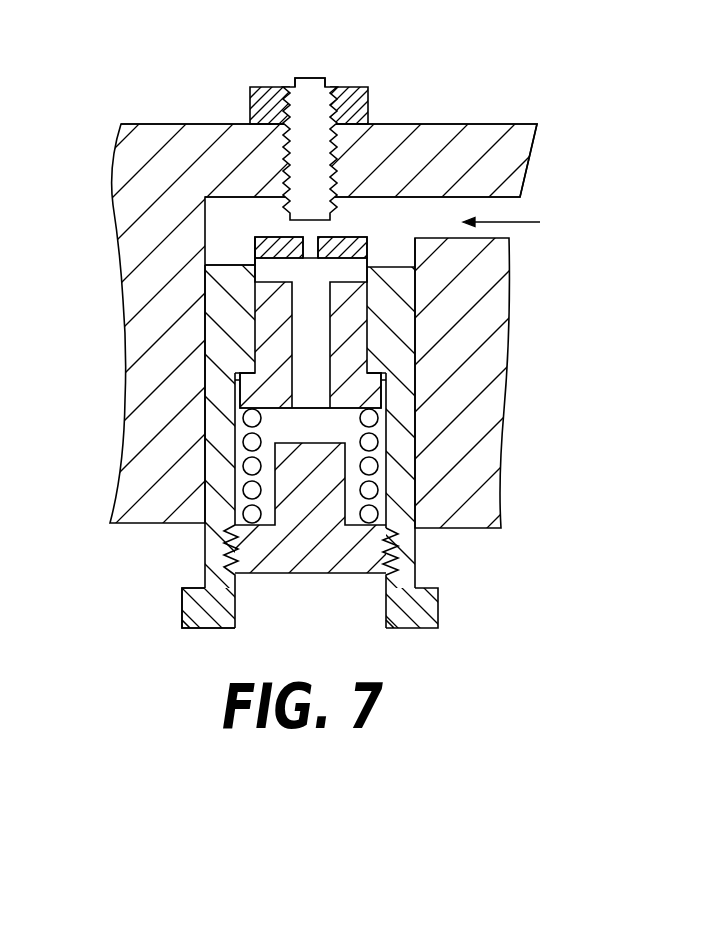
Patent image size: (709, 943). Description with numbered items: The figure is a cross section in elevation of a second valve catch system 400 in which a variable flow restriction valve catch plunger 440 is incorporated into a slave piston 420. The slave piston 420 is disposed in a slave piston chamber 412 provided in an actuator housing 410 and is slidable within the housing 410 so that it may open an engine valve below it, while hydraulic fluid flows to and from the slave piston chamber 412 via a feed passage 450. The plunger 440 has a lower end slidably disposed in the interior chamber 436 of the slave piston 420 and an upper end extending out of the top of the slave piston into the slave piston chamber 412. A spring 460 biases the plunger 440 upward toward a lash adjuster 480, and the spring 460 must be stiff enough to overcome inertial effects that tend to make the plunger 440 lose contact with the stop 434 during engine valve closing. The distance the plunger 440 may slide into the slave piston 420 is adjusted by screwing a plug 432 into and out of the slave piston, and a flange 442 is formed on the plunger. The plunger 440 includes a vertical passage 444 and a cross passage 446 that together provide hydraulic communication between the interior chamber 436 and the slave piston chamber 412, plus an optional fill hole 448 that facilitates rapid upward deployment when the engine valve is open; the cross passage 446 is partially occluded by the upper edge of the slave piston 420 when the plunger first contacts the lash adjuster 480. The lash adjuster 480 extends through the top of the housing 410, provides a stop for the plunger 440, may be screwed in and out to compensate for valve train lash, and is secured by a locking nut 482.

The system 400 is at (138, 572).
The actuator housing 410 is at (147, 197).
The slave piston chamber 412 is at (237, 213).
The slave piston 420 is at (420, 612).
The plug 432 is at (305, 572).
The stop 434 is at (241, 368).
The interior chamber 436 is at (330, 427).
The plunger 440 is at (343, 335).
The piston flange 442 is at (366, 392).
The vertical passage 444 is at (302, 272).
The cross passage 446 is at (250, 262).
The fill hole 448 is at (330, 229).
The feed passage 450 is at (534, 223).
The spring 460 is at (369, 489).
The lash adjuster 480 is at (313, 85).
The locking nut 482 is at (354, 108).